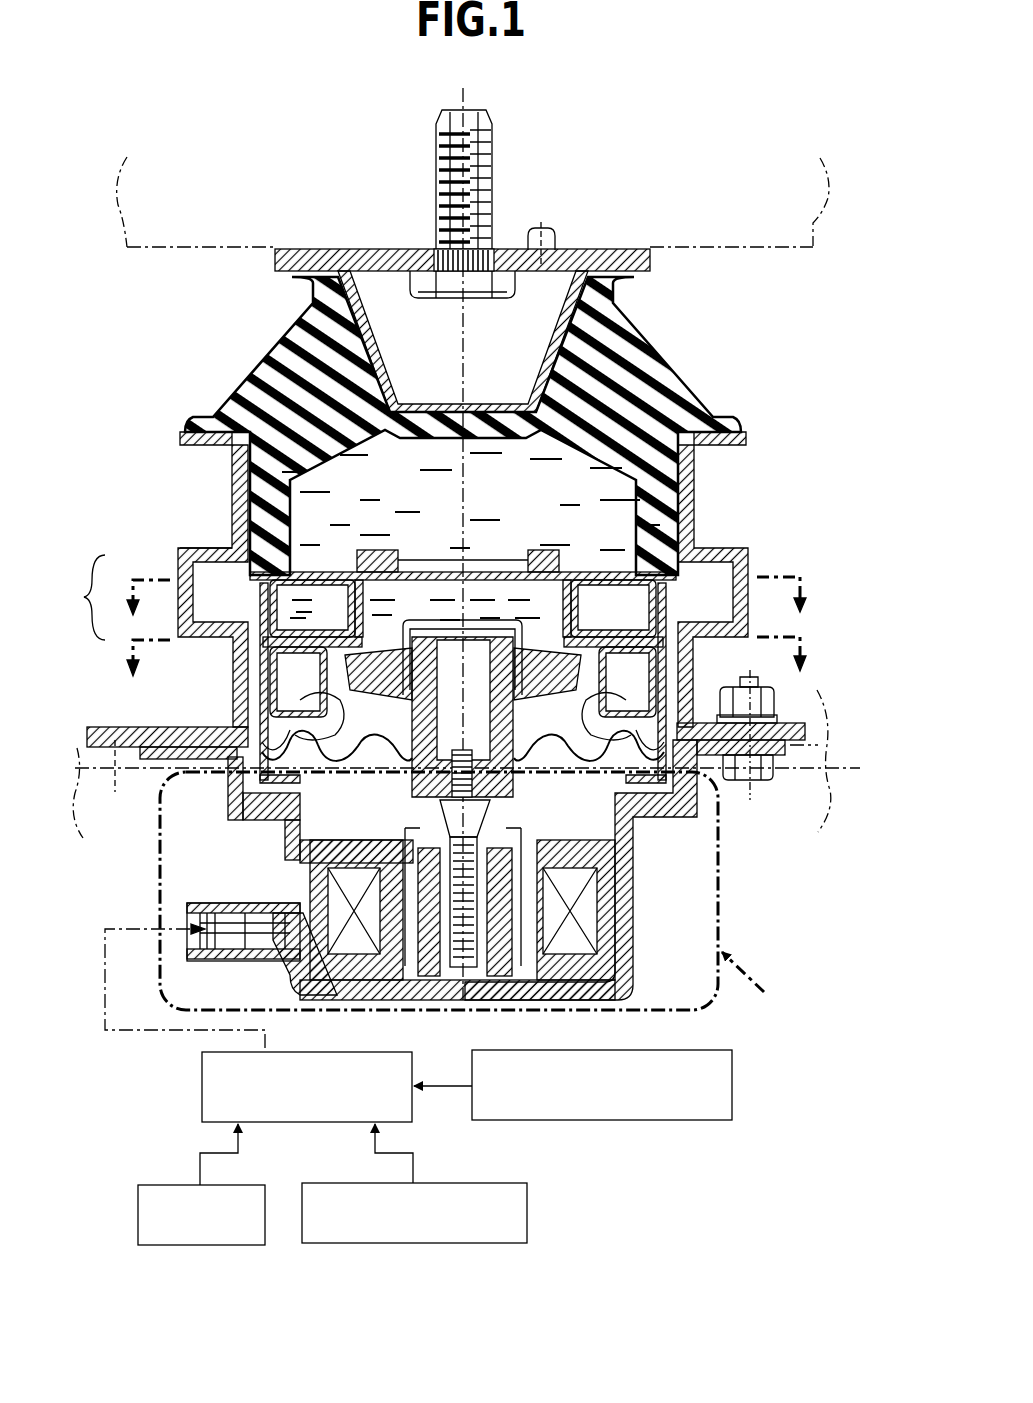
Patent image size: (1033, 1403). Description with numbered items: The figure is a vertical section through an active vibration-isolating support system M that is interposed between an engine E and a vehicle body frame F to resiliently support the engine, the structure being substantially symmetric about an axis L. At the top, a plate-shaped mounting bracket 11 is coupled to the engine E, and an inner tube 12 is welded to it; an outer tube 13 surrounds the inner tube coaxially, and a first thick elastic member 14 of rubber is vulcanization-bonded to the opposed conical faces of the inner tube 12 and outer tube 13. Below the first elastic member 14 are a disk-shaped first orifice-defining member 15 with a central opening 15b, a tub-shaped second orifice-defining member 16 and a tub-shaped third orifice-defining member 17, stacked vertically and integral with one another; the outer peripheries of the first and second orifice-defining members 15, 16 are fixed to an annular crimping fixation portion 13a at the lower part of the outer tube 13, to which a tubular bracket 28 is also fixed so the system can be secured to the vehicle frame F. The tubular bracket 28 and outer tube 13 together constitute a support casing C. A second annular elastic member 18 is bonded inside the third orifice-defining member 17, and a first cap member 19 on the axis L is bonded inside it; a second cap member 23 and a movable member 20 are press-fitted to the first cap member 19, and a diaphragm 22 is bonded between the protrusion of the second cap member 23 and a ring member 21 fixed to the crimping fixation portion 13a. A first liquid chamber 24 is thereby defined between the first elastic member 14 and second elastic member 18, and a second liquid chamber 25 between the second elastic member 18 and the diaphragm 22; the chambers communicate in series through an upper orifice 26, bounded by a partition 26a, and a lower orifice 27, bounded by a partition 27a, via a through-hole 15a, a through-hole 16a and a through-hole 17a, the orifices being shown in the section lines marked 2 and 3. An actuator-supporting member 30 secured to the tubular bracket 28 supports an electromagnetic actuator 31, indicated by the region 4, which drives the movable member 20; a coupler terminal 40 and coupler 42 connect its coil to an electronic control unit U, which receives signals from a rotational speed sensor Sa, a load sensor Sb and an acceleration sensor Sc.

The axis L is at (468, 93).
The mounting bracket 11 is at (630, 249).
The engine E is at (727, 250).
The first elastic member 14 is at (272, 365).
The inner tube 12 is at (374, 343).
The outer tube 13 is at (423, 579).
The crimping fixation portion 13a is at (179, 572).
The tubular bracket 28 is at (160, 725).
The support casing C is at (82, 597).
The section line of FIG. 2 is at (468, 574).
The section line of FIG. 3 is at (468, 676).
The vehicle body frame F is at (754, 748).
The active vibration-isolating support system M is at (740, 496).
The first orifice-defining member 15 is at (376, 548).
The opening 15b is at (402, 571).
The through-hole 15a is at (612, 571).
The first liquid chamber 24 is at (516, 508).
The second orifice-defining member 16 is at (300, 626).
The upper orifice 26 is at (294, 586).
The third orifice-defining member 17 is at (300, 608).
The second elastic member 18 is at (349, 666).
The through-hole 16a is at (609, 608).
The partition 26a is at (592, 590).
The lower orifice 27 is at (292, 657).
The through-hole 17a is at (627, 682).
The partition 27a is at (645, 692).
The ring member 21 is at (248, 578).
The first cap member 19 is at (481, 628).
The movable member 20 is at (512, 788).
The second cap member 23 is at (378, 718).
The second liquid chamber 25 is at (571, 718).
The diaphragm 22 is at (348, 754).
The actuator-supporting member 30 is at (229, 786).
The electromagnetic actuator 31 is at (641, 892).
The actuator assembly 4 is at (472, 898).
The coupler terminal 40 is at (216, 952).
The coupler 42 is at (206, 906).
The electronic control unit U is at (202, 1072).
The rotational speed sensor Sa is at (686, 1120).
The load sensor Sb is at (164, 1185).
The acceleration sensor Sc is at (502, 1183).